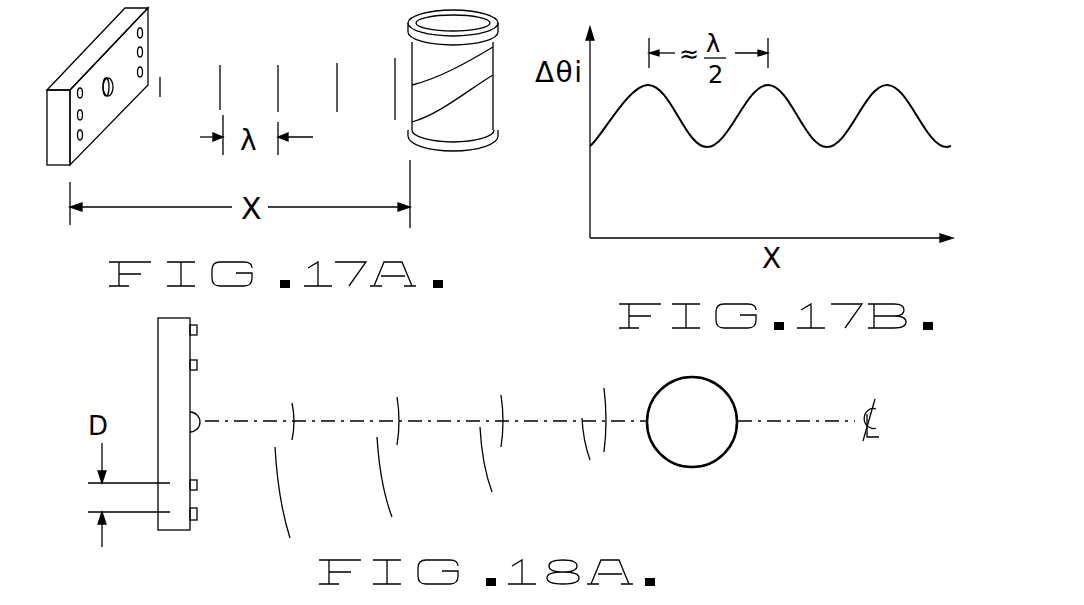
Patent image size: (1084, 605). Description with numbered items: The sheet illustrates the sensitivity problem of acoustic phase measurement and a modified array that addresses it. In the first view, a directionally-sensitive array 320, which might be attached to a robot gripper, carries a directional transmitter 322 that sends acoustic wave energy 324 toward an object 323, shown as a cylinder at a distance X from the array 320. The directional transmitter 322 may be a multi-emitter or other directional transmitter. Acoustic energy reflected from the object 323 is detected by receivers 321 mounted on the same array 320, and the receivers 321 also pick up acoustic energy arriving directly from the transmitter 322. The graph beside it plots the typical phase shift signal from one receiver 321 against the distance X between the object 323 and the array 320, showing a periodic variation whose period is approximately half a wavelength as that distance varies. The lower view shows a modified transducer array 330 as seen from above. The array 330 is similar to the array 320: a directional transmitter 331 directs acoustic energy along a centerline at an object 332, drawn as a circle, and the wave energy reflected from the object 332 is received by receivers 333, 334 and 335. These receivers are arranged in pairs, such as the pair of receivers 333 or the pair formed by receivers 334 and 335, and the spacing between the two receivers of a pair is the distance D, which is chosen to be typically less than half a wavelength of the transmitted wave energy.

In FIG. 17A, the array 320 is at (75, 58).
In FIG. 17A, the receivers 321 is at (140, 75).
In FIG. 17A, the directional transmitter 322 is at (110, 77).
In FIG. 17A, the object 323 is at (410, 40).
In FIG. 17A, the acoustic wave energy 324 is at (221, 70).
In FIG. 18A, the modified transducer array 330 is at (158, 346).
In FIG. 18A, the directional transmitter 331 is at (200, 412).
In FIG. 18A, the object 332 is at (670, 380).
In FIG. 18A, the receivers 333 is at (197, 364).
In FIG. 18A, the receiver 334 is at (197, 485).
In FIG. 18A, the receiver 335 is at (197, 513).